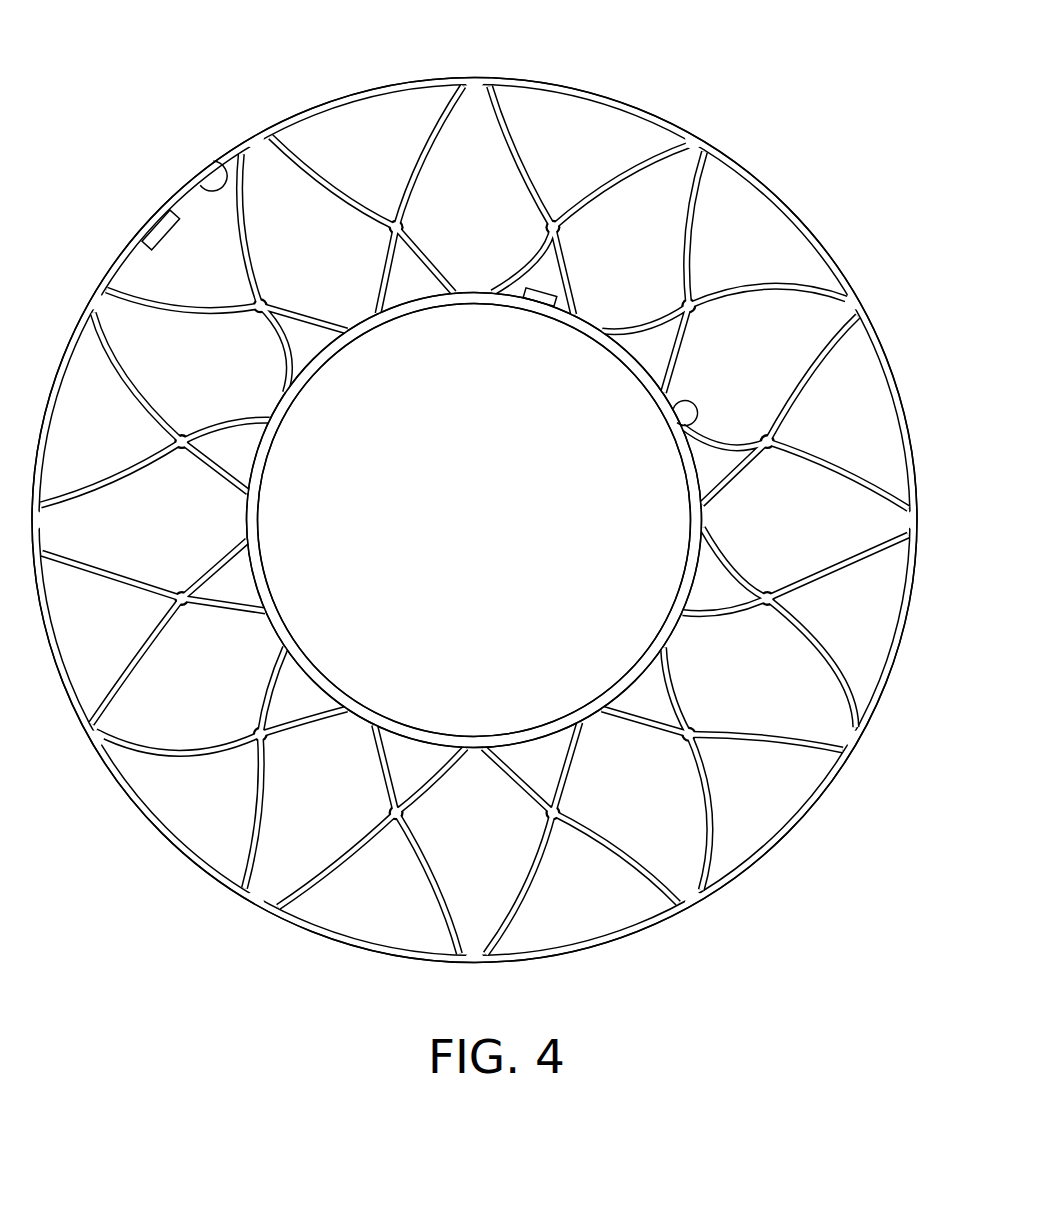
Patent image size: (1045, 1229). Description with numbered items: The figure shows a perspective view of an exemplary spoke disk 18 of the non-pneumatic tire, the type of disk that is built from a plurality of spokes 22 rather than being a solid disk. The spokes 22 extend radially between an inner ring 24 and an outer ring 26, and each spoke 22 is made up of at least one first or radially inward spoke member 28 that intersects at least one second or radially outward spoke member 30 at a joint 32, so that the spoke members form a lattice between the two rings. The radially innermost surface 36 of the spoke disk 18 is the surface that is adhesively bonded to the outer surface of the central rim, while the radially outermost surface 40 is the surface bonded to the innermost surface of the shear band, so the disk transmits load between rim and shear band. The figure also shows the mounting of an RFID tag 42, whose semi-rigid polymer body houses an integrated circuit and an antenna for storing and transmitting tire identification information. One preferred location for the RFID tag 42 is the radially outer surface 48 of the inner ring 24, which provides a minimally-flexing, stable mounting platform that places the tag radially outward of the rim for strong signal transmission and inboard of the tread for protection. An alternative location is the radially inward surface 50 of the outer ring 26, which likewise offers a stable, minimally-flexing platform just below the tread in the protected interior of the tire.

The spoke disk 18 is at (877, 311).
The spoke 22 is at (751, 752).
The inner ring 24 is at (306, 670).
The outer ring 26 is at (886, 680).
The first or radially inward spoke member 28 is at (732, 567).
The second or radially outward spoke member 30 is at (847, 550).
The joint 32 is at (768, 590).
The radially innermost surface 36 is at (258, 533).
The radially outermost surface 40 is at (737, 163).
The RFID tag 42 is at (176, 253).
The radially outer surface 48 is at (677, 424).
The radially inward surface 50 is at (213, 161).